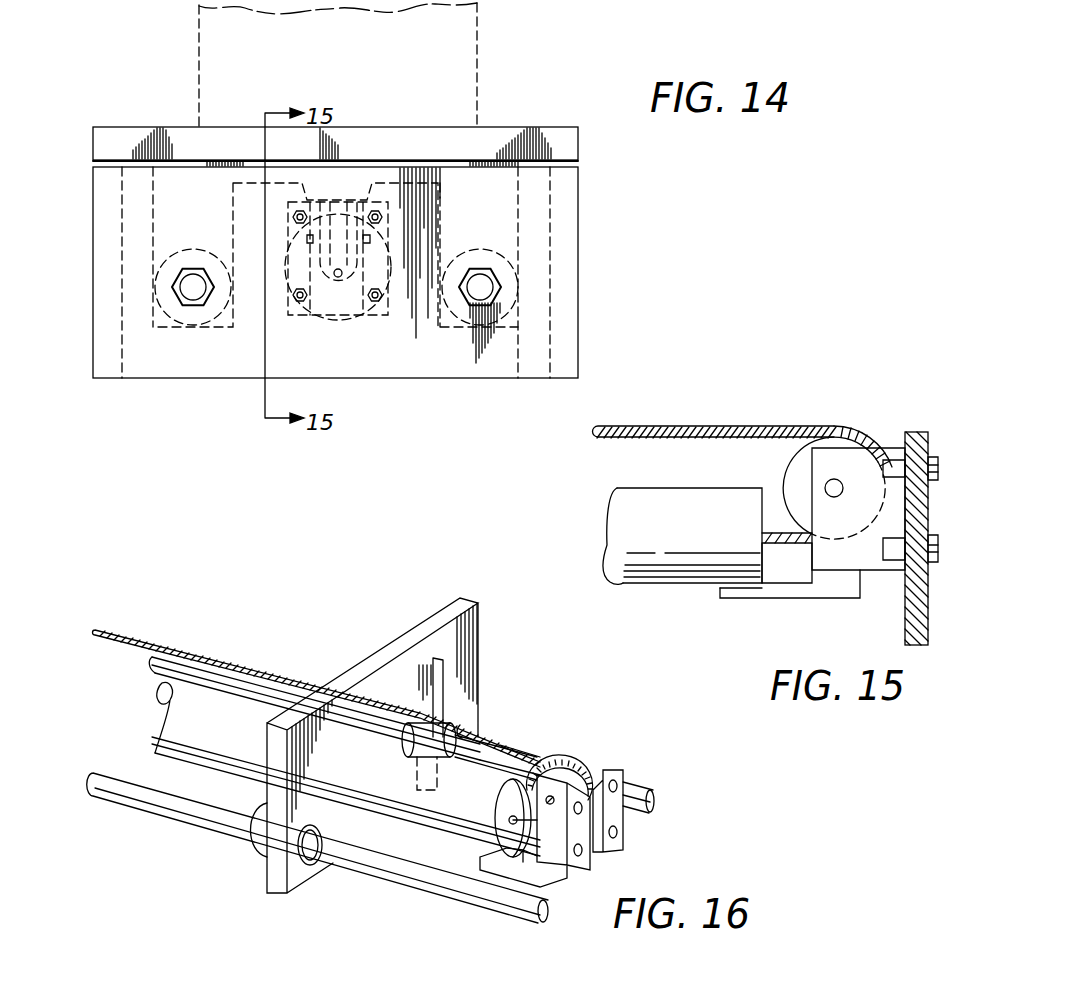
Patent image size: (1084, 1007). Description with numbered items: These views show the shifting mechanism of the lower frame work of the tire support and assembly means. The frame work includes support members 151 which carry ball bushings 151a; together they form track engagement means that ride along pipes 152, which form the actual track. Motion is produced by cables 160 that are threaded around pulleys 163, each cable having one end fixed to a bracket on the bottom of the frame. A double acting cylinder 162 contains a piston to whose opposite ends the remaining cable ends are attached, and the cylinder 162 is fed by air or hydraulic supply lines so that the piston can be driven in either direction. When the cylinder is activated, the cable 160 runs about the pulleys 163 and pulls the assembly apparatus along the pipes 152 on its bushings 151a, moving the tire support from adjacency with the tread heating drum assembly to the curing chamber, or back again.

In FIG. 14, the support member 151 is at (165, 323).
In FIG. 16, the support member 151 is at (280, 883).
In FIG. 14, the ball bushing 151a is at (205, 313).
In FIG. 16, the ball bushing 151a is at (255, 853).
In FIG. 14, the pipe 152 is at (190, 289).
In FIG. 16, the pipe 152 is at (448, 888).
In FIG. 14, the cable 160 is at (342, 200).
In FIG. 15, the cable 160 is at (683, 433).
In FIG. 16, the cable 160 is at (200, 662).
In FIG. 15, the double acting cylinder 162 is at (677, 575).
In FIG. 16, the double acting cylinder 162 is at (170, 730).
In FIG. 14, the pulley 163 is at (328, 312).
In FIG. 15, the pulley 163 is at (793, 467).
In FIG. 16, the pulley 163 is at (553, 767).